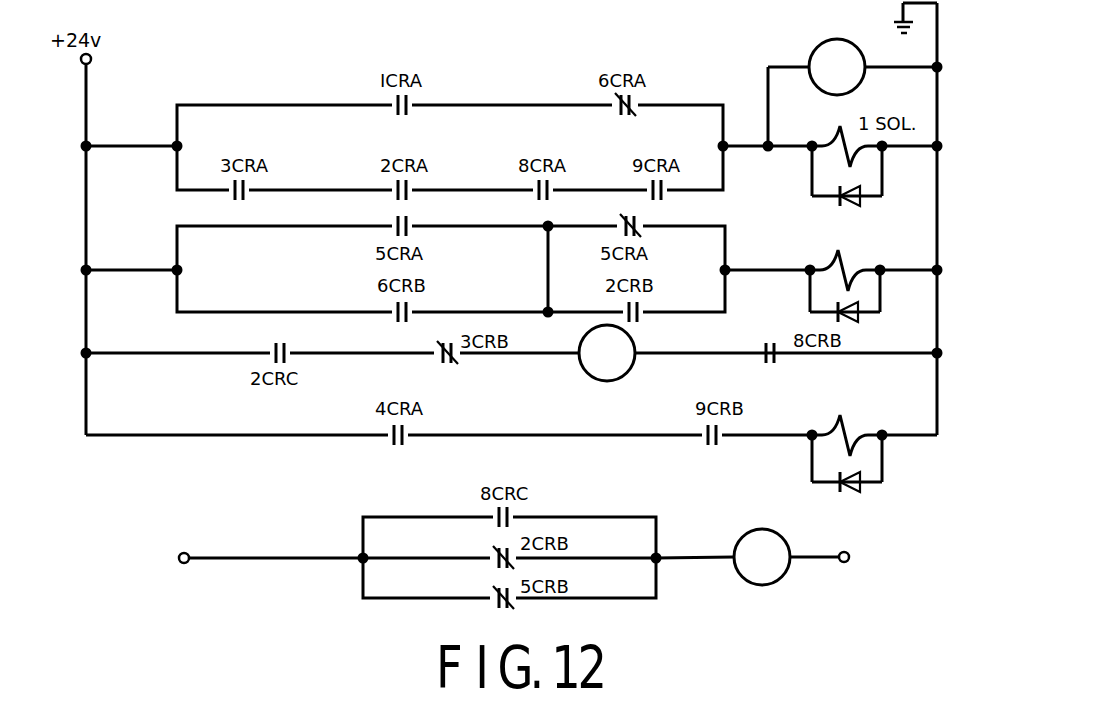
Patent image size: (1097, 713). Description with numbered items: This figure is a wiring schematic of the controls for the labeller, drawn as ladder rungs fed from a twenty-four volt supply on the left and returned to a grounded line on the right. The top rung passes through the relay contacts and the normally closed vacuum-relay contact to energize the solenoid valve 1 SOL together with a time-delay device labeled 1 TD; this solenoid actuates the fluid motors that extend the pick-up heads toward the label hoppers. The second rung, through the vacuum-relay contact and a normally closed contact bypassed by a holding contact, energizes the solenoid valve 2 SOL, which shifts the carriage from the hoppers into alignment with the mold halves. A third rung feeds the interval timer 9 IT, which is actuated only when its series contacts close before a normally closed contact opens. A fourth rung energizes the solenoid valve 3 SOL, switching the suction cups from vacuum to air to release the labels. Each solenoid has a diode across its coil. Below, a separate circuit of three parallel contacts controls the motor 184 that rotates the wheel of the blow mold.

The motor 184 is at (774, 538).
The time delay relay 1TD 1 is at (852, 92).
The solenoid 2 SOL 2 is at (863, 280).
The solenoid 3 SOL 3 is at (859, 445).
The timer 9IT 9 is at (607, 353).